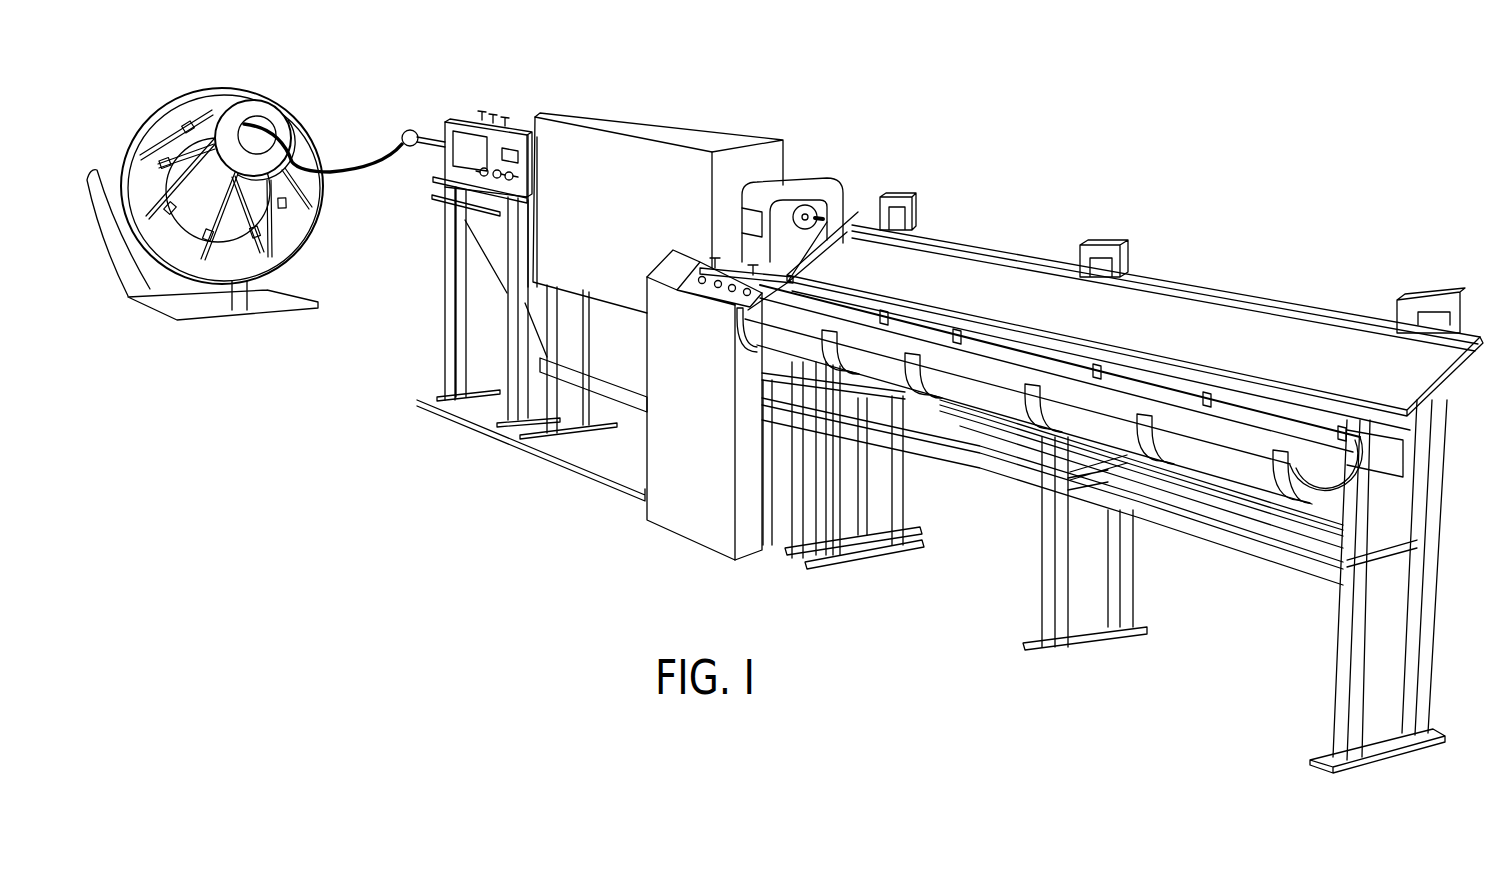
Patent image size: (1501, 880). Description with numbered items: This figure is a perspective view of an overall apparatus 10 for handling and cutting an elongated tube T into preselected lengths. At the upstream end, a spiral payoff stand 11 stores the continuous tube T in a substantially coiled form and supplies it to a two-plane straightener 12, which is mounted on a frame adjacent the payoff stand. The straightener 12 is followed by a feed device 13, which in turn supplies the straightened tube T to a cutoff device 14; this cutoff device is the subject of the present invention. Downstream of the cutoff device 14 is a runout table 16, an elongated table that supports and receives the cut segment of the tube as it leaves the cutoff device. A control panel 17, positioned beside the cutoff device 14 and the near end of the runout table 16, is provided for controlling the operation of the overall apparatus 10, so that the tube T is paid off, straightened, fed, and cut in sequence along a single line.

The overall apparatus 10 is at (858, 167).
The spiral payoff stand 11 is at (278, 122).
The elongated tube T is at (363, 171).
The two-plane straightener 12 is at (522, 125).
The feed device 13 is at (683, 137).
The cutoff device 14 is at (806, 182).
The runout table 16 is at (1203, 310).
The control panel 17 is at (703, 296).